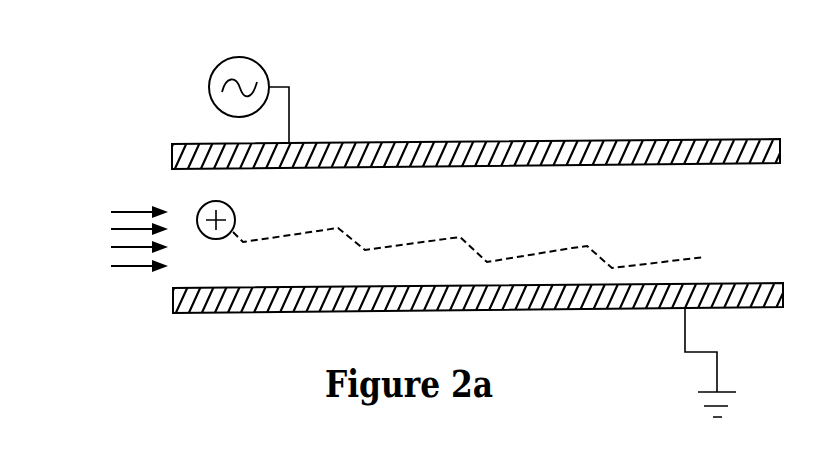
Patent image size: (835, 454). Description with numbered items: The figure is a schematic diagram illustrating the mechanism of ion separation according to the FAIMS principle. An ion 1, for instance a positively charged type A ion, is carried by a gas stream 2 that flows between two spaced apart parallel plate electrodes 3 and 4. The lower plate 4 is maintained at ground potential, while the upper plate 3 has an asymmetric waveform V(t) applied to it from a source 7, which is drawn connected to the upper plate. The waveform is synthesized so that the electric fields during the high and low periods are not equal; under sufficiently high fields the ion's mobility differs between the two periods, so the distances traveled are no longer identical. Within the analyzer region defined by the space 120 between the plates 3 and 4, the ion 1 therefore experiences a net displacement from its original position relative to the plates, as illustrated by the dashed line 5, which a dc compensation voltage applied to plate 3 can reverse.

The ion 1 is at (196, 214).
The gas stream 2 is at (132, 257).
The upper plate electrode 3 is at (425, 143).
The lower plate electrode 4 is at (200, 312).
The dashed line 5 is at (572, 248).
The AC voltage source 7 is at (212, 72).
The space 120 is at (543, 200).